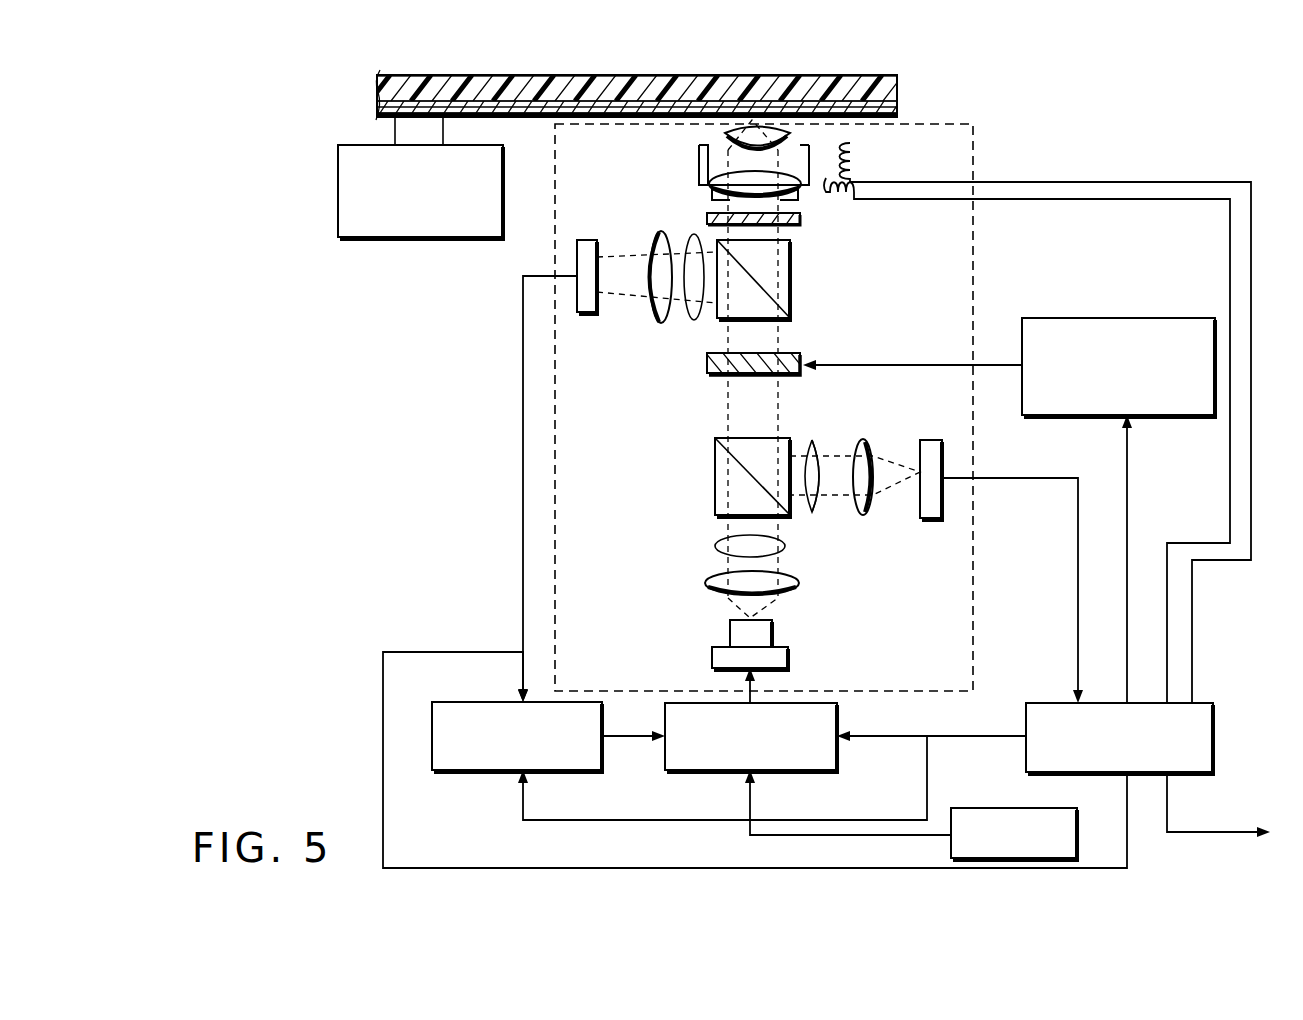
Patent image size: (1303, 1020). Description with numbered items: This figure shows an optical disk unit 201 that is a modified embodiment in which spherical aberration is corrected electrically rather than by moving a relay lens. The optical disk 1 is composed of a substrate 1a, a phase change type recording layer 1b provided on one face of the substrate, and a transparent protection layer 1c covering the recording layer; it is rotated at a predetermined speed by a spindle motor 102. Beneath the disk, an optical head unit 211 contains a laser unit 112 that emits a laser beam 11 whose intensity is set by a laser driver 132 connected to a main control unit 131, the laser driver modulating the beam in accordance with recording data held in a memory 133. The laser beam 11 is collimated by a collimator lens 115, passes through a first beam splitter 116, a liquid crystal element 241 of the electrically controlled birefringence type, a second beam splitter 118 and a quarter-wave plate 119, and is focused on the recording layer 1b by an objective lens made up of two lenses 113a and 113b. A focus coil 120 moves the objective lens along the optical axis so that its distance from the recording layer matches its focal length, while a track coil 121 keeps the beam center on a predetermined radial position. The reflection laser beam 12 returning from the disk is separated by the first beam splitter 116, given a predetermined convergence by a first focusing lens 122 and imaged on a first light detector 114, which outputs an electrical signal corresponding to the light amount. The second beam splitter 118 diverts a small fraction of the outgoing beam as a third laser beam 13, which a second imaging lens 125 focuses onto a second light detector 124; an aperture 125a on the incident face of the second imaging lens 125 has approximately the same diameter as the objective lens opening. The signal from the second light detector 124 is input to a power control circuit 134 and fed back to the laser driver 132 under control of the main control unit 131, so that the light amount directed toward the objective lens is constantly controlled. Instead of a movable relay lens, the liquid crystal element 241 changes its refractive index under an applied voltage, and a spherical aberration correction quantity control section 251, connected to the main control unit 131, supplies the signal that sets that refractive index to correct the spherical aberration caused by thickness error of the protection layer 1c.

The optical disk 1 is at (483, 75).
The substrate 1a is at (707, 78).
The recording layer 1b is at (768, 104).
The transparent protection layer 1c is at (826, 114).
The spindle motor 102 is at (422, 238).
The optical disc apparatus 201 is at (1078, 122).
The optical head 211 is at (975, 631).
The lens of objective lens 113a is at (744, 131).
The lens of objective lens 113b is at (780, 188).
The focus coil 120 is at (856, 150).
The track coil 121 is at (854, 190).
The λ/4 wavelength plate 119 is at (780, 224).
The second beam splitter 118 is at (790, 285).
The second light detector 124 is at (577, 261).
The second imaging lens 125 is at (657, 318).
The aperture 125a is at (660, 232).
The third laser beam 13 is at (693, 240).
The liquid crystal element 241 is at (710, 375).
The first beam splitter 116 is at (715, 476).
The reflection laser beam 12 is at (812, 492).
The first focusing lens 122 is at (862, 518).
The first light detector 114 is at (930, 520).
The laser beam 11 is at (750, 544).
The collimator lens 115 is at (705, 584).
The laser unit 112 is at (712, 657).
The spherical aberration correction quantity control section 251 is at (1120, 318).
The main control unit 131 is at (1215, 736).
The laser driver 132 is at (837, 755).
The memory 133 is at (983, 808).
The power control circuit 134 is at (470, 772).